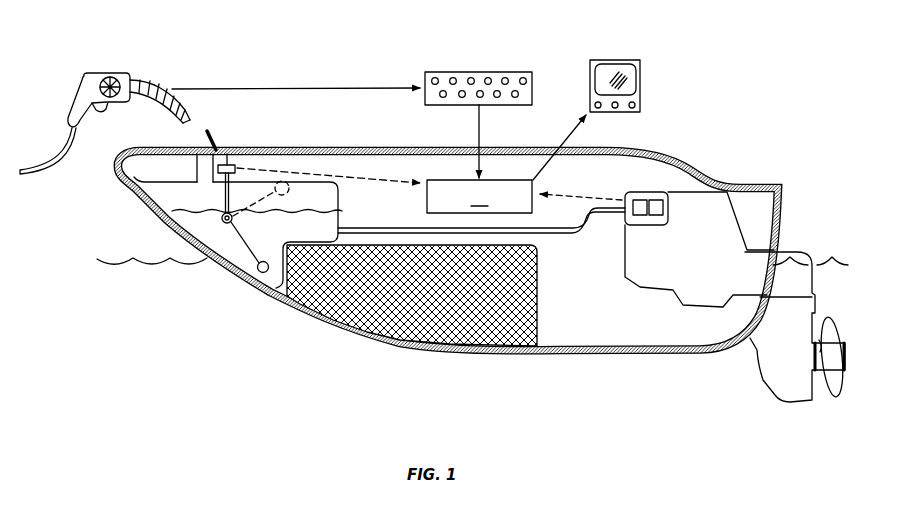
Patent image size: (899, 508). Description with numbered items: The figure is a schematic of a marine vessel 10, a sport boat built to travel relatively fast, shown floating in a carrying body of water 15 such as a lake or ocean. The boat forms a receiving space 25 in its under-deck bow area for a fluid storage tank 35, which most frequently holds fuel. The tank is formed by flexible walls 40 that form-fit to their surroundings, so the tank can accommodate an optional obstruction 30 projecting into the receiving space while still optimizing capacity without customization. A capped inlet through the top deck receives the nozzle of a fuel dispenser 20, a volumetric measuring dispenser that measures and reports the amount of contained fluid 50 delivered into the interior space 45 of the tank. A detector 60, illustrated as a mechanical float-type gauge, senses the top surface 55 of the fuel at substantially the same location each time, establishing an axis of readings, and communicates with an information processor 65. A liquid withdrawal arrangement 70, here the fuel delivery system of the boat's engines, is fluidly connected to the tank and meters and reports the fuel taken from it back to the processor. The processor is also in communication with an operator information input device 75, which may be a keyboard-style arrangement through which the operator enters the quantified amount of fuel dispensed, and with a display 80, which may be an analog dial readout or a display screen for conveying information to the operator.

The marine vessel 10 is at (770, 103).
The carrying body of water 15 is at (179, 301).
The fuel dispenser 20 is at (101, 55).
The receiving space 25 is at (139, 169).
The optional obstruction 30 is at (364, 312).
The fluid storage tank 35 is at (342, 199).
The flexible walls 40 is at (255, 182).
The interior space 45 is at (163, 201).
The contained fluid 50 is at (273, 284).
The top surface 55 is at (297, 208).
The detector 60 is at (236, 163).
The information processor 65 is at (524, 159).
The liquid withdrawal arrangement 70 is at (682, 186).
The operator information input device 75 is at (509, 70).
The display 80 is at (629, 60).